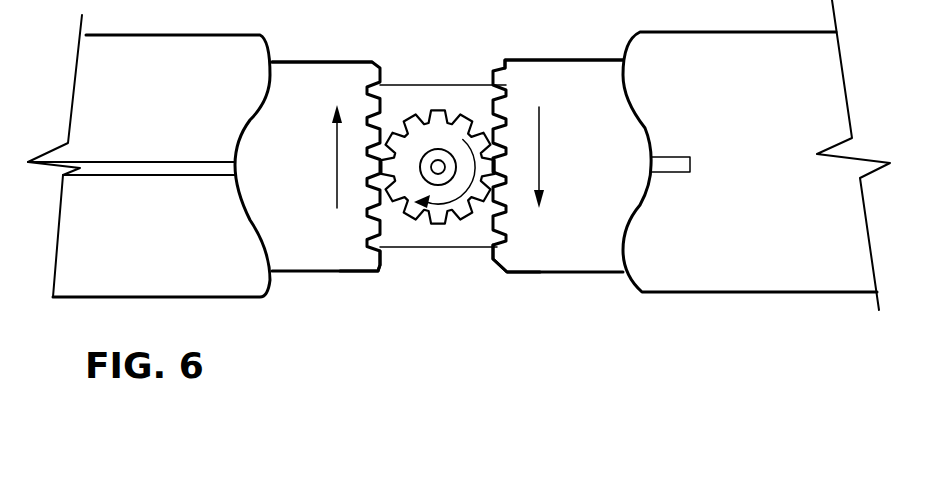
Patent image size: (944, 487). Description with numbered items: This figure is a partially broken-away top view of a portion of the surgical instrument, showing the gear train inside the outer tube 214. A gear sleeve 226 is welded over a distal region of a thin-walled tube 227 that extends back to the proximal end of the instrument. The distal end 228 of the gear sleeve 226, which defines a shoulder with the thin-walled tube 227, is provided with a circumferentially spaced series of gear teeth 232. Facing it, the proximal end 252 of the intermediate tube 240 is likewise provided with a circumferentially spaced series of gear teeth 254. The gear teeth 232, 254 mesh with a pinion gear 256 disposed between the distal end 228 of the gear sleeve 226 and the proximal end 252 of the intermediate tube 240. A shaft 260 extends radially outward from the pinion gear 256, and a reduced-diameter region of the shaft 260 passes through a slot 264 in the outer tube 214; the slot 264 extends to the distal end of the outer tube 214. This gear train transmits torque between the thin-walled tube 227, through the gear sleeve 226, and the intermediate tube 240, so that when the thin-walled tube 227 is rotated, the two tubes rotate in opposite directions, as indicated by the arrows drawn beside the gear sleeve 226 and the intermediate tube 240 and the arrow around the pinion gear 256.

The outer tube 214 is at (140, 270).
The gear sleeve 226 is at (274, 163).
The thin-walled tube 227 is at (430, 237).
The distal end of gear sleeve 228 is at (293, 77).
The gear teeth 232 is at (373, 262).
The intermediate tube 240 is at (572, 173).
The proximal end of intermediate tube 252 is at (527, 73).
The gear teeth 254 is at (505, 250).
The pinion gear 256 is at (436, 127).
The shaft 260 is at (424, 153).
The slot 264 is at (127, 170).